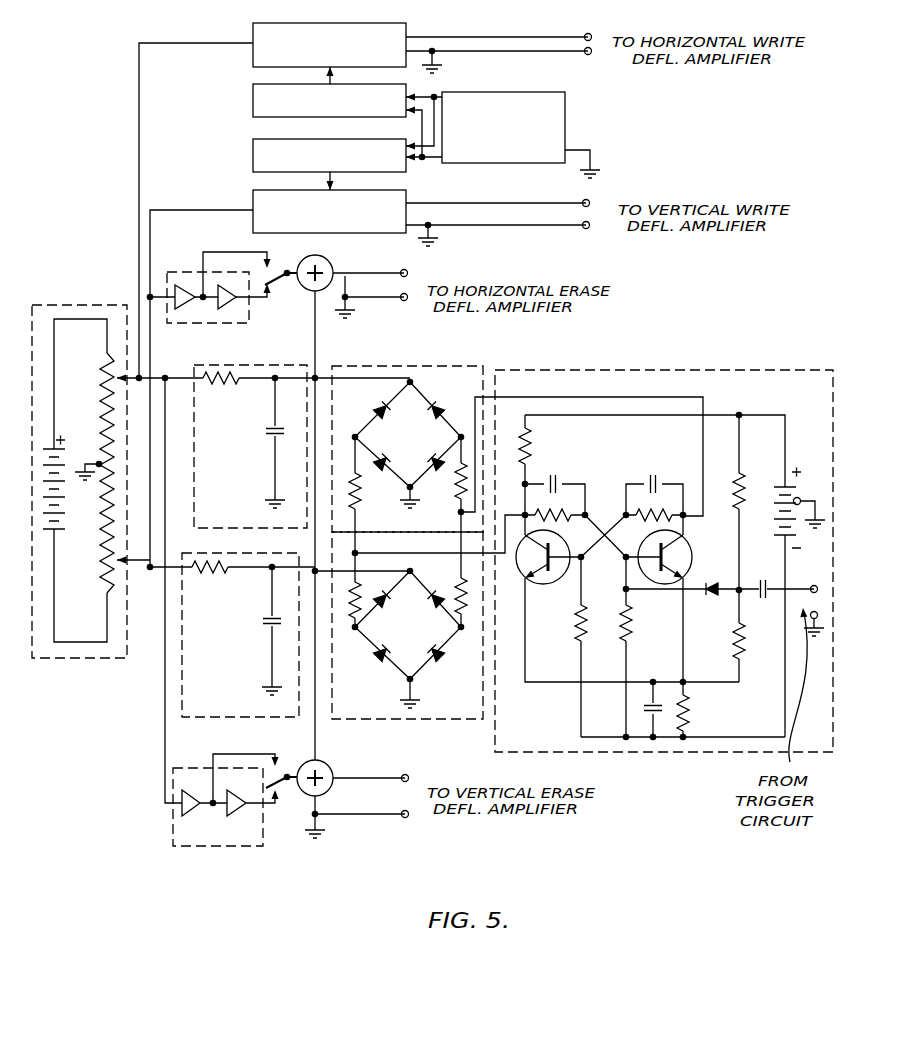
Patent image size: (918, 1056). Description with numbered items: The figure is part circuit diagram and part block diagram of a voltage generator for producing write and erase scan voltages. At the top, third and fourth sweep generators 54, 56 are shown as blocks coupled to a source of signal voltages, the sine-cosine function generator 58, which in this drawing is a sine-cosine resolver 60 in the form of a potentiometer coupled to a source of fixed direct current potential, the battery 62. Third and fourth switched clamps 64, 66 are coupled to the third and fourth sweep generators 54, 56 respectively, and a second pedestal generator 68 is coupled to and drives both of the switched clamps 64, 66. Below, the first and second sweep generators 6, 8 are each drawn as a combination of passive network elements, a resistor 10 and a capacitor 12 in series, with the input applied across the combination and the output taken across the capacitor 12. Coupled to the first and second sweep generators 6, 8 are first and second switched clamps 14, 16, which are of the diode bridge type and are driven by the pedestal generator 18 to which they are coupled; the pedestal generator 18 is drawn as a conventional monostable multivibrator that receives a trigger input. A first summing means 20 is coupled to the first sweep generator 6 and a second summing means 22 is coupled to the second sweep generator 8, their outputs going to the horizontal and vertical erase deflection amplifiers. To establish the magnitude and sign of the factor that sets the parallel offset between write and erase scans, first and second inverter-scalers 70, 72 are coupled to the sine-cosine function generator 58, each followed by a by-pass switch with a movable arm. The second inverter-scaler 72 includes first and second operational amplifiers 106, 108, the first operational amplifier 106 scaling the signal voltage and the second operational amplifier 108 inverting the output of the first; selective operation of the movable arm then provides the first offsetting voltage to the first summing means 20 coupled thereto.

The first sweep generator 6 is at (227, 428).
The second sweep generator 8 is at (182, 668).
The resistor 10 is at (221, 392).
The capacitor 12 is at (266, 440).
The first switched clamp 14 is at (419, 370).
The second switched clamp 16 is at (409, 722).
The pedestal generator 18 is at (667, 380).
The first summing means 20 is at (329, 267).
The second summing means 22 is at (330, 766).
The third sweep generator 54 is at (256, 216).
The fourth sweep generator 56 is at (405, 32).
The sine-cosine function generator 58 is at (91, 459).
The sine-cosine resolver 60 is at (100, 408).
The battery 62 is at (58, 462).
The third switched clamp 64 is at (256, 163).
The fourth switched clamp 66 is at (253, 90).
The second pedestal generator 68 is at (545, 112).
The first inverter-scaler 70 is at (197, 844).
The second inverter-scaler 72 is at (210, 295).
The first operational amplifier 106 is at (181, 312).
The second operational amplifier 108 is at (232, 312).